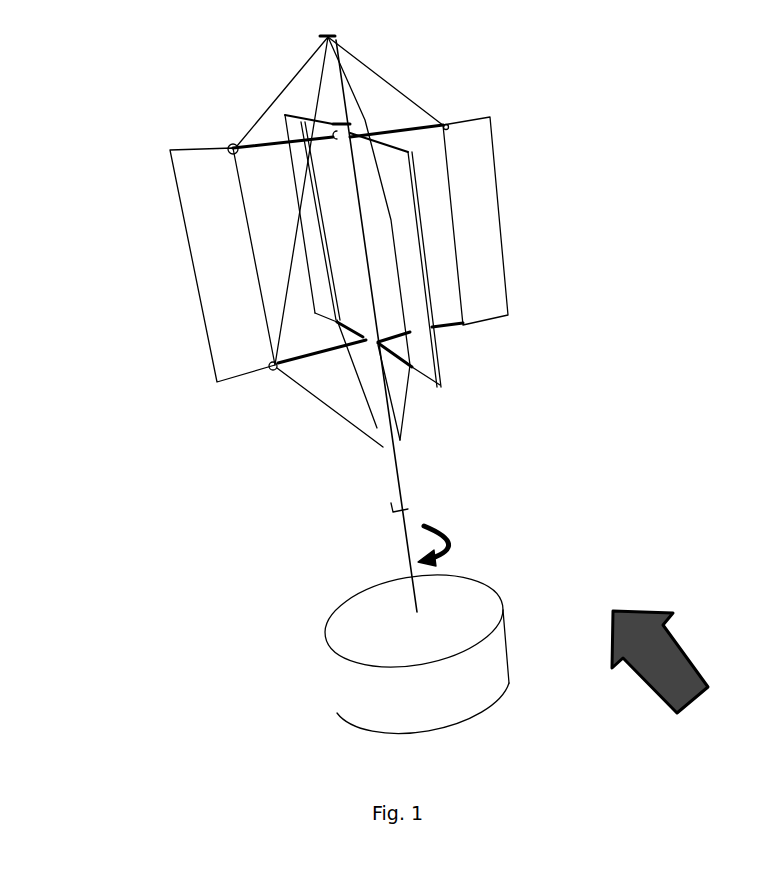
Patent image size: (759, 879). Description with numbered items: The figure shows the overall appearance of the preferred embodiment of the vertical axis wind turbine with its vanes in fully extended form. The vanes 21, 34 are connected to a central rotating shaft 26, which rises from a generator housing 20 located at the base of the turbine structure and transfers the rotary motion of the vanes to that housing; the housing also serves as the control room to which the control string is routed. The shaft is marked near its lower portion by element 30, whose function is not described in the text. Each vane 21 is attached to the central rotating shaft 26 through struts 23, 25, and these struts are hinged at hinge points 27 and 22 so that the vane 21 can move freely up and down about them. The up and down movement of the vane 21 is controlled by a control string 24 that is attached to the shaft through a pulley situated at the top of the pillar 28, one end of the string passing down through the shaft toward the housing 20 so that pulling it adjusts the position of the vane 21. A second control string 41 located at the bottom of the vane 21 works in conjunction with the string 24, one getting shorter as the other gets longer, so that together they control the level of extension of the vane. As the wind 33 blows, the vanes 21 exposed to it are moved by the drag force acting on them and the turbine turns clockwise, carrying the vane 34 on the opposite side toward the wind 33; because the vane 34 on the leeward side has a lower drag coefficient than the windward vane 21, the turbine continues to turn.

The generator housing 20 is at (324, 637).
The vane 21 is at (207, 340).
The hinge 22 is at (228, 145).
The strut 23 is at (275, 145).
The control string 24 is at (407, 92).
The strut 25 is at (448, 333).
The central rotating shaft 26 is at (347, 233).
The hinge 27 is at (326, 151).
The pillar 28 is at (332, 38).
The shaft 30 is at (392, 526).
The wind 33 is at (676, 672).
The vane 34 is at (503, 254).
The control string 41 is at (330, 410).